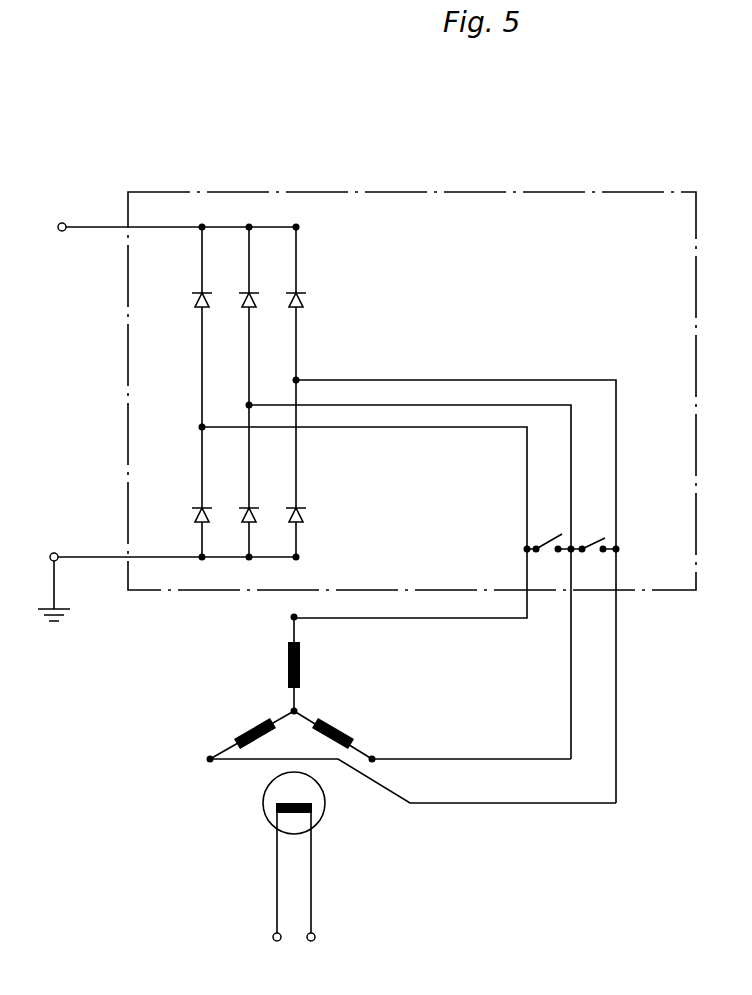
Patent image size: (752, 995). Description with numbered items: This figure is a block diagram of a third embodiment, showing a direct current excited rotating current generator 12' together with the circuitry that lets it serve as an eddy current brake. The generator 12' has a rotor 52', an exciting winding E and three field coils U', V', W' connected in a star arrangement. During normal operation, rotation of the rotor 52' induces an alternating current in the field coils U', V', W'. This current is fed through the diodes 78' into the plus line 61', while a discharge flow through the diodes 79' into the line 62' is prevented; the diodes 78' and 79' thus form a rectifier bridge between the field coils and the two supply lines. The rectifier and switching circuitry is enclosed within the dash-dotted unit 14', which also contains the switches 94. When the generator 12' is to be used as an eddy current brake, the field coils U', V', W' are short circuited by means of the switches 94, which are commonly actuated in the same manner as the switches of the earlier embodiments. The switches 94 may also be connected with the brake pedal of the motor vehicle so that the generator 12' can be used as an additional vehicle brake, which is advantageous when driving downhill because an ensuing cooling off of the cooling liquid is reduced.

The rectifier/control unit 14' is at (412, 363).
The plus line 61' is at (177, 236).
The line 62' is at (167, 568).
The diodes 78' is at (264, 287).
The diodes 79' is at (264, 502).
The switches 94 is at (598, 540).
The direct current excited rotating current generator 12' is at (257, 860).
The rotor 52' is at (264, 827).
The field coil U' is at (273, 664).
The field coil V' is at (333, 728).
The field coil W' is at (252, 732).
The exciting winding E is at (298, 815).